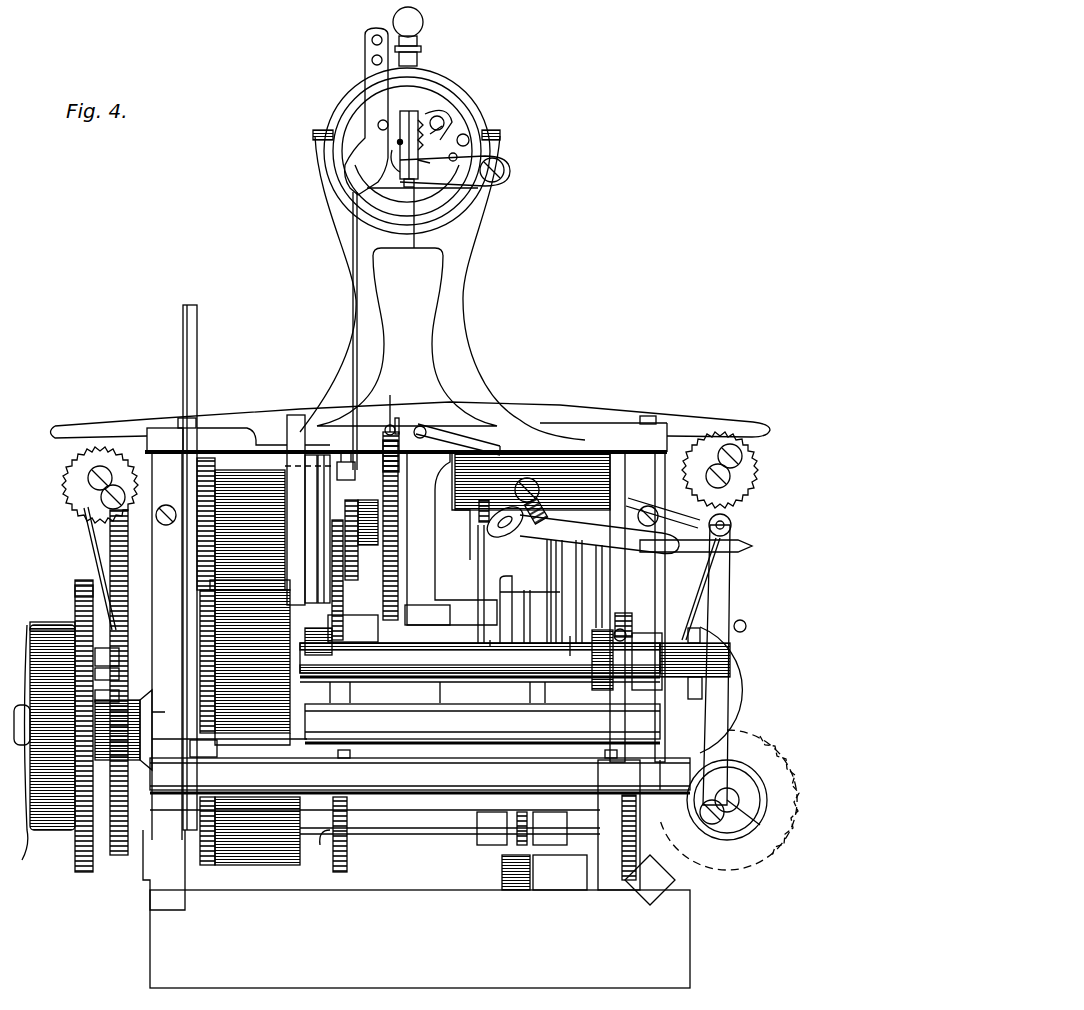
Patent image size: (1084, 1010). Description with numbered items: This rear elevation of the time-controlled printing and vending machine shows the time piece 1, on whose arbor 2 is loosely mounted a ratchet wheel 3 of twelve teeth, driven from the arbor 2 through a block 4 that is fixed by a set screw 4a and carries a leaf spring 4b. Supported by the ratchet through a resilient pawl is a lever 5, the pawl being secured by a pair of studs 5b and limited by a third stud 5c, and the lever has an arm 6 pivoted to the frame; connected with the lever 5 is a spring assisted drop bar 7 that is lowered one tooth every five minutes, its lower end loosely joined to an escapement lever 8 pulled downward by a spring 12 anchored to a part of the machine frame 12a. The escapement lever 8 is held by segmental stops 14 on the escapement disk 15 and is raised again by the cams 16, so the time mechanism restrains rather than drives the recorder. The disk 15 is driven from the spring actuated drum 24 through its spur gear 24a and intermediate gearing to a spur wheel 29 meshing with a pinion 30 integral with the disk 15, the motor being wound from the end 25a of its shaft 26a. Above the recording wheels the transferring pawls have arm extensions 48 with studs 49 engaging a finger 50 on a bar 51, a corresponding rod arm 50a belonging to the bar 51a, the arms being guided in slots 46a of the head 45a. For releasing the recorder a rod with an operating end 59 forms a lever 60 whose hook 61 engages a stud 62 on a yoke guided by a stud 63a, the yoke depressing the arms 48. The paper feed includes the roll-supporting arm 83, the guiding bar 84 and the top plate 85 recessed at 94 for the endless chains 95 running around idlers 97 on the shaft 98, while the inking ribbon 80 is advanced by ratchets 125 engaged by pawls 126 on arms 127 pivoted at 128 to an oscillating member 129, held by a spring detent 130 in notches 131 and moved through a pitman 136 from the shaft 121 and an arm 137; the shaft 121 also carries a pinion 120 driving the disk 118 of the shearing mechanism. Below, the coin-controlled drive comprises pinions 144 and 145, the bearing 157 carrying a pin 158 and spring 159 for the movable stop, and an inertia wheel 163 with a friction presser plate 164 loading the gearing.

The time piece 1 is at (450, 92).
The arbor 2 is at (398, 142).
The ratchet wheel 3 is at (398, 158).
The block 4 is at (411, 113).
The set screw 4a is at (442, 285).
The leaf spring 4b is at (422, 162).
The lever 5 is at (370, 90).
The studs 5b is at (372, 40).
The third stud 5c is at (378, 124).
The arm 6 is at (468, 188).
The drop bar 7 is at (352, 302).
The escapement lever 8 is at (348, 482).
The spring 12 is at (392, 542).
The part of the machine frame 12a is at (416, 630).
The segmental stops 14 is at (318, 594).
The escapement disk 15 is at (323, 512).
The cam 16 is at (338, 540).
The spring actuated drum 24 is at (238, 882).
The spur gear 24a is at (215, 662).
The end of shaft 25a is at (722, 668).
The shaft 26a is at (480, 673).
The spur wheel 29 is at (364, 544).
The pinion 30 is at (328, 548).
The head 45a is at (466, 506).
The slots 46a is at (490, 514).
The arm extension 48 is at (478, 556).
The stud 49 is at (478, 584).
The finger 50 is at (494, 584).
The rod arm 50a is at (522, 600).
The bar 51 is at (508, 612).
The bar 51a is at (506, 656).
The operating end 59 is at (740, 546).
The lever 60 is at (555, 528).
The hook 61 is at (508, 532).
The stud 62 is at (548, 548).
The stud 63a is at (532, 481).
The inking ribbon 80 is at (86, 520).
The arm 83 is at (292, 418).
The guiding bar 84 is at (482, 723).
The top plate 85 is at (446, 752).
The recess 94 is at (484, 768).
The endless chains 95 is at (348, 858).
The idlers 97 is at (330, 860).
The shaft 98 is at (455, 836).
The disk 118 is at (738, 686).
The pinion 120 is at (760, 742).
The shaft 121 is at (732, 833).
The ratchets 125 is at (80, 479).
The pawls 126 is at (72, 448).
The arms 127 is at (246, 410).
The pivot 128 is at (416, 433).
The oscillating member 129 is at (428, 426).
The spring detent 130 is at (455, 416).
The notches 131 is at (397, 418).
The pitman 136 is at (728, 607).
The arm 137 is at (665, 515).
The pinion 144 is at (82, 585).
The pinion 145 is at (78, 710).
The bearing 157 is at (140, 708).
The pin 158 is at (78, 686).
The spring 159 is at (94, 652).
The inertia wheel 163 is at (58, 612).
The presser plate 164 is at (35, 750).